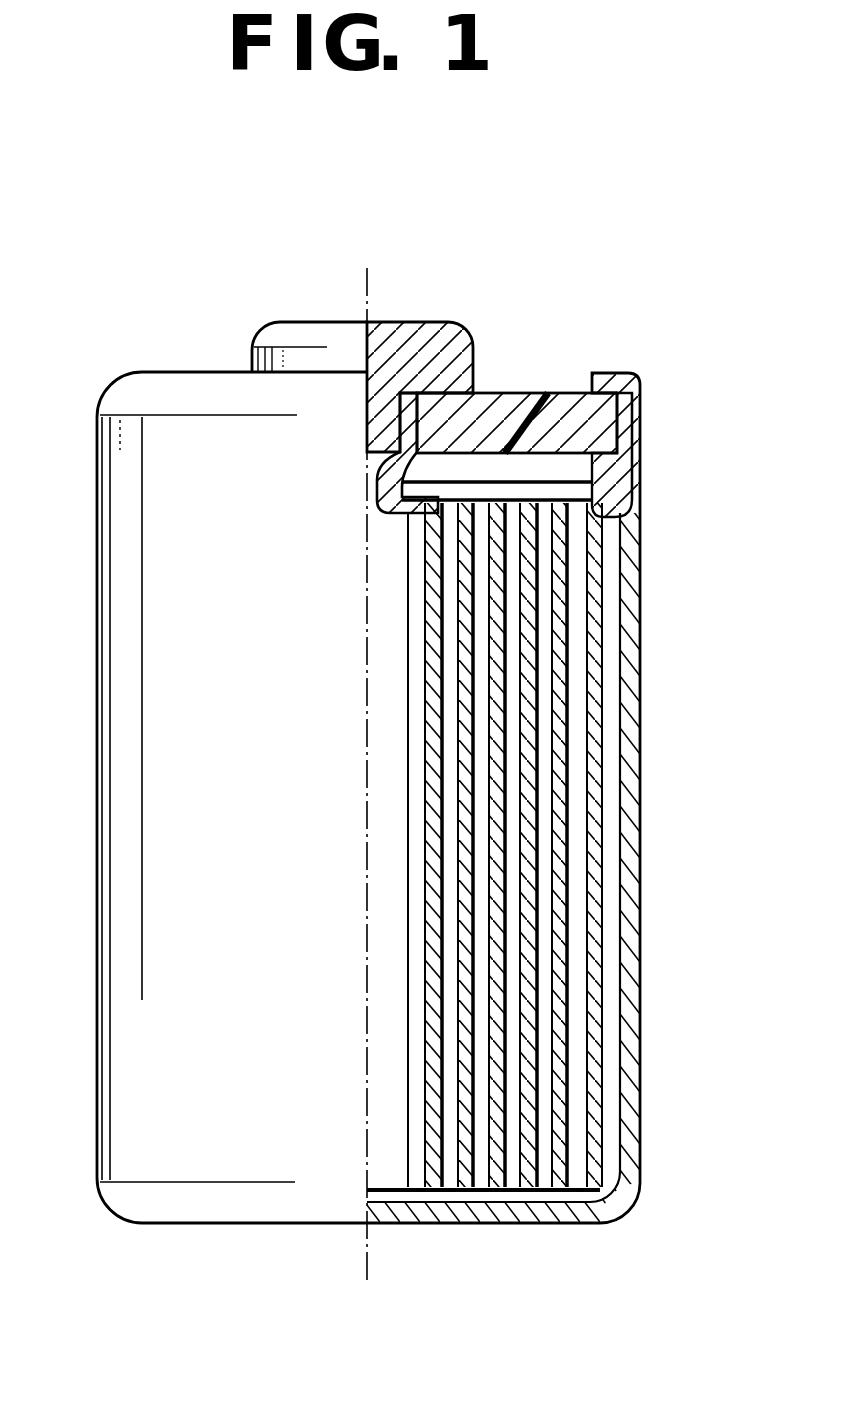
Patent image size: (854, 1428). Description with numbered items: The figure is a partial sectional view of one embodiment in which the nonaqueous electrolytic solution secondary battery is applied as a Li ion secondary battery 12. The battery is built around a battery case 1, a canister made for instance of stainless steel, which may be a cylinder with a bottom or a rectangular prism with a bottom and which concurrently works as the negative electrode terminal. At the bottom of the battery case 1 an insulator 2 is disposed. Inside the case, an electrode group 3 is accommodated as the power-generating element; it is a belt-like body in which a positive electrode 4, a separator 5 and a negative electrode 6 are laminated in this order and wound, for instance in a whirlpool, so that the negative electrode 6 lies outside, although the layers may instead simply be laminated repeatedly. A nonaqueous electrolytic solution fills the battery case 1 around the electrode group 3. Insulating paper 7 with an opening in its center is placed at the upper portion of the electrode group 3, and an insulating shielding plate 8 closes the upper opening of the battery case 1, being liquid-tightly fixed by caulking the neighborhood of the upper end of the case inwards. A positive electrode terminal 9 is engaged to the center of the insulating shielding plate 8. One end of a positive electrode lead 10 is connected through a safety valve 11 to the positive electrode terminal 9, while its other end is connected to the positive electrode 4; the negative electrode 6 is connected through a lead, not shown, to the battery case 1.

The battery case 1 is at (632, 1078).
The insulator 2 is at (531, 1195).
The electrode group 3 is at (583, 845).
The positive electrode 4 is at (558, 628).
The separator 5 is at (578, 673).
The negative electrode 6 is at (707, 557).
The insulating paper 7 is at (630, 483).
The insulating shielding plate 8 is at (533, 403).
The positive electrode terminal 9 is at (443, 337).
The positive electrode lead 10 is at (387, 498).
The safety valve 11 is at (380, 403).
The Li ion secondary battery 12 is at (643, 347).